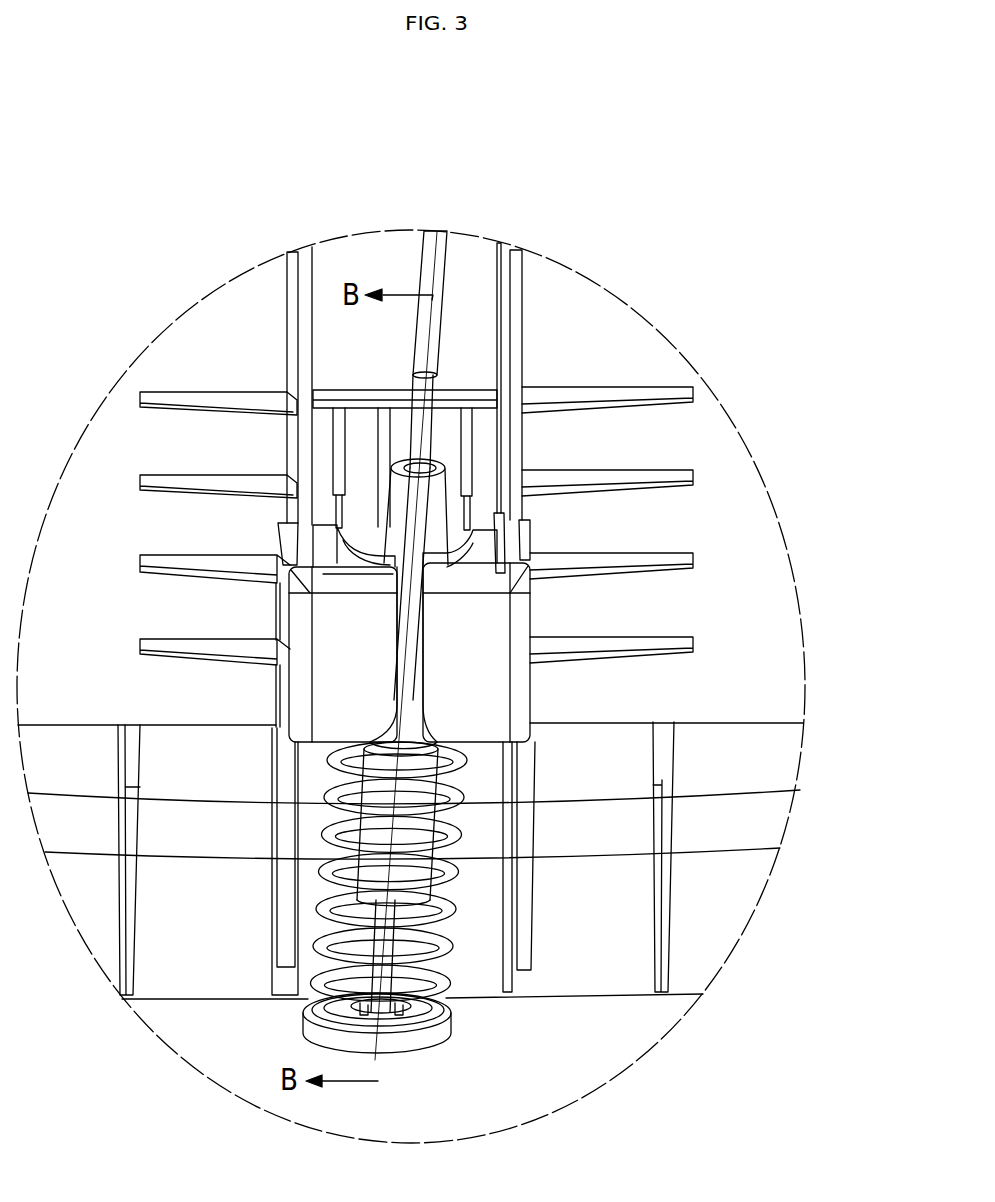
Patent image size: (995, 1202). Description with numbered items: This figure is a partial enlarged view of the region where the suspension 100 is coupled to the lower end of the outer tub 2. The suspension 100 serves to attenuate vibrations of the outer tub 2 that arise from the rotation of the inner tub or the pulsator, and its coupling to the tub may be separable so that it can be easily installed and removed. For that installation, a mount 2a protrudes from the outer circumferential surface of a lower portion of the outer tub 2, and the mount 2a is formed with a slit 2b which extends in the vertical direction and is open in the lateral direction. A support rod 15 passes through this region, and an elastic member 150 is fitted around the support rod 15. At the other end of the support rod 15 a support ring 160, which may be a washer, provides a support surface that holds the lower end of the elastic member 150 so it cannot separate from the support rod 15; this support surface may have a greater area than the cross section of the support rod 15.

The outer tub 2 is at (587, 330).
The mount 2a is at (445, 615).
The slit 2b is at (405, 592).
The support rod 15 is at (437, 265).
The suspension 100 is at (463, 928).
The elastic member 150 is at (322, 912).
The support ring 160 is at (312, 1024).